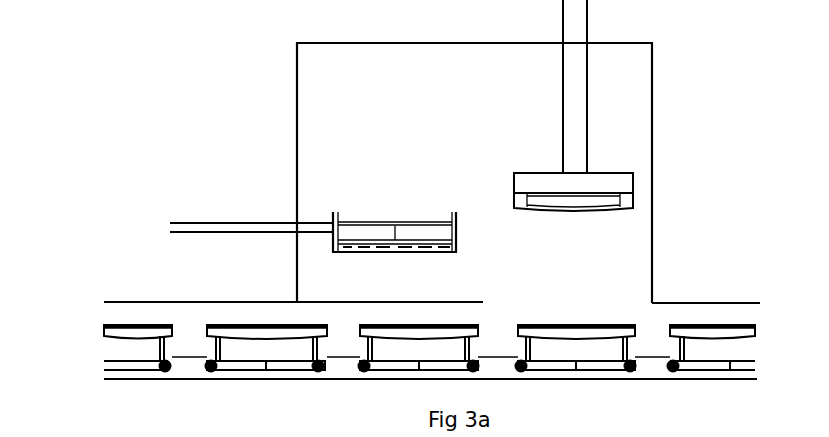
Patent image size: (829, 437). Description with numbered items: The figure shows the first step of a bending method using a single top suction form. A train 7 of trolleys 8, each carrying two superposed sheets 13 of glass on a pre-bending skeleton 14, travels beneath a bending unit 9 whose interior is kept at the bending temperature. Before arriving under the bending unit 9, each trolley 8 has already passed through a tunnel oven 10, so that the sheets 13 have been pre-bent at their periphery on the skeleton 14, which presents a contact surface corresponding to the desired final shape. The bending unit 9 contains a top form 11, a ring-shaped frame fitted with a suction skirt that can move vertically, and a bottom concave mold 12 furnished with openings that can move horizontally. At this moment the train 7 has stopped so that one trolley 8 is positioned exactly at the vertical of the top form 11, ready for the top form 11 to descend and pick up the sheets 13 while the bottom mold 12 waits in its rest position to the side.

The train 7 is at (90, 308).
The trolley 8 is at (514, 354).
The bending unit 9 is at (658, 133).
The tunnel oven 10 is at (733, 302).
The top form 11 is at (510, 196).
The bottom concave mold 12 is at (378, 221).
The sheets 13 is at (593, 329).
The pre-bending skeleton 14 is at (644, 333).